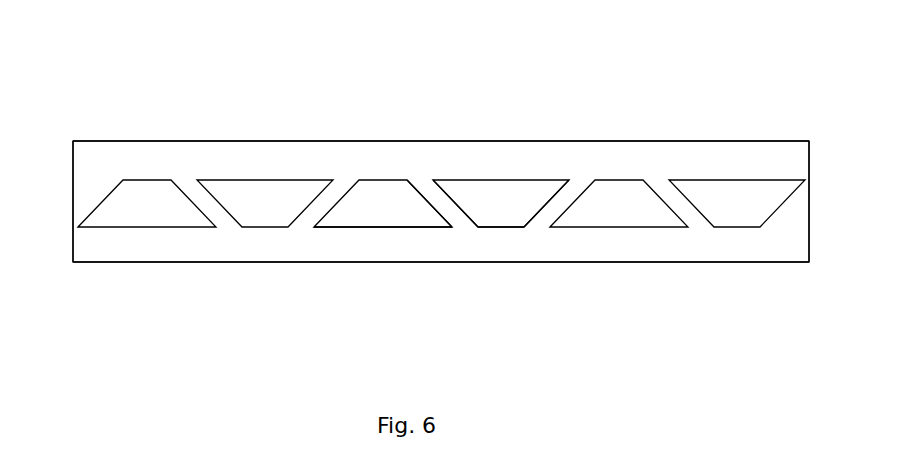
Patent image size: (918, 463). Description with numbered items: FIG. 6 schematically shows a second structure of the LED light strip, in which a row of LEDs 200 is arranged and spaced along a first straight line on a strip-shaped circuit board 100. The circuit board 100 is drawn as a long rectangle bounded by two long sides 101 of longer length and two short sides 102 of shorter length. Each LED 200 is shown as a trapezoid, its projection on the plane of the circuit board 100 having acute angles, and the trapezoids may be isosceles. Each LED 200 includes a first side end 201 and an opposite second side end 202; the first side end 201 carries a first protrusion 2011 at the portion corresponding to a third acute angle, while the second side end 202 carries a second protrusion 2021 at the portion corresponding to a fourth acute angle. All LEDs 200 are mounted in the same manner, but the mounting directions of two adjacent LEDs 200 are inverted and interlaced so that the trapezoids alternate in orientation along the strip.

The circuit board 100 is at (677, 151).
The long side 101 is at (278, 145).
The short side 102 is at (73, 197).
The LED 200 is at (392, 196).
The first side end 201 is at (347, 193).
The second side end 202 is at (423, 197).
The first protrusion 2011 is at (547, 190).
The second protrusion 2021 is at (460, 193).